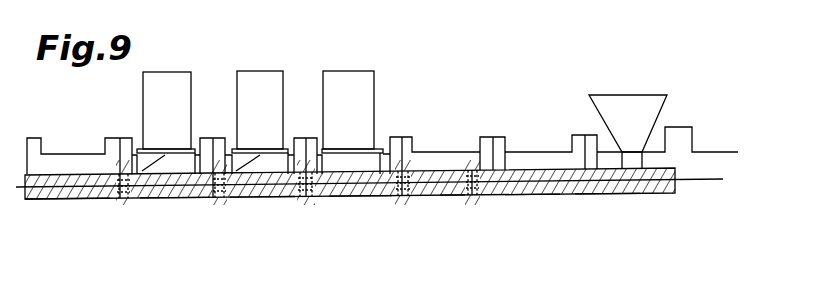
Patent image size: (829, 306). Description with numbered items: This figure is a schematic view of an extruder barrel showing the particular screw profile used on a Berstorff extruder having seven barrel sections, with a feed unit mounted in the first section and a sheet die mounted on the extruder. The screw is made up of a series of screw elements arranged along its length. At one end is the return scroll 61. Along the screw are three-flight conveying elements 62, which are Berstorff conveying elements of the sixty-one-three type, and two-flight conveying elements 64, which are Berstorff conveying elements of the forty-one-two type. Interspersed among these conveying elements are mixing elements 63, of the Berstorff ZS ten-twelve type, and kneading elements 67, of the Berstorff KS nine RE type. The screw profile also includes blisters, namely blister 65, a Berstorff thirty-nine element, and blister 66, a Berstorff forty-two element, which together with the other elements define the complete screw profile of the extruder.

The return scroll 61 is at (660, 193).
The three-flight conveying elements 62 is at (157, 198).
The mixing elements 63 is at (127, 198).
The two-flight conveying elements 64 is at (37, 199).
The blister 65 is at (397, 196).
The blister 66 is at (222, 197).
The kneading elements 67 is at (240, 197).